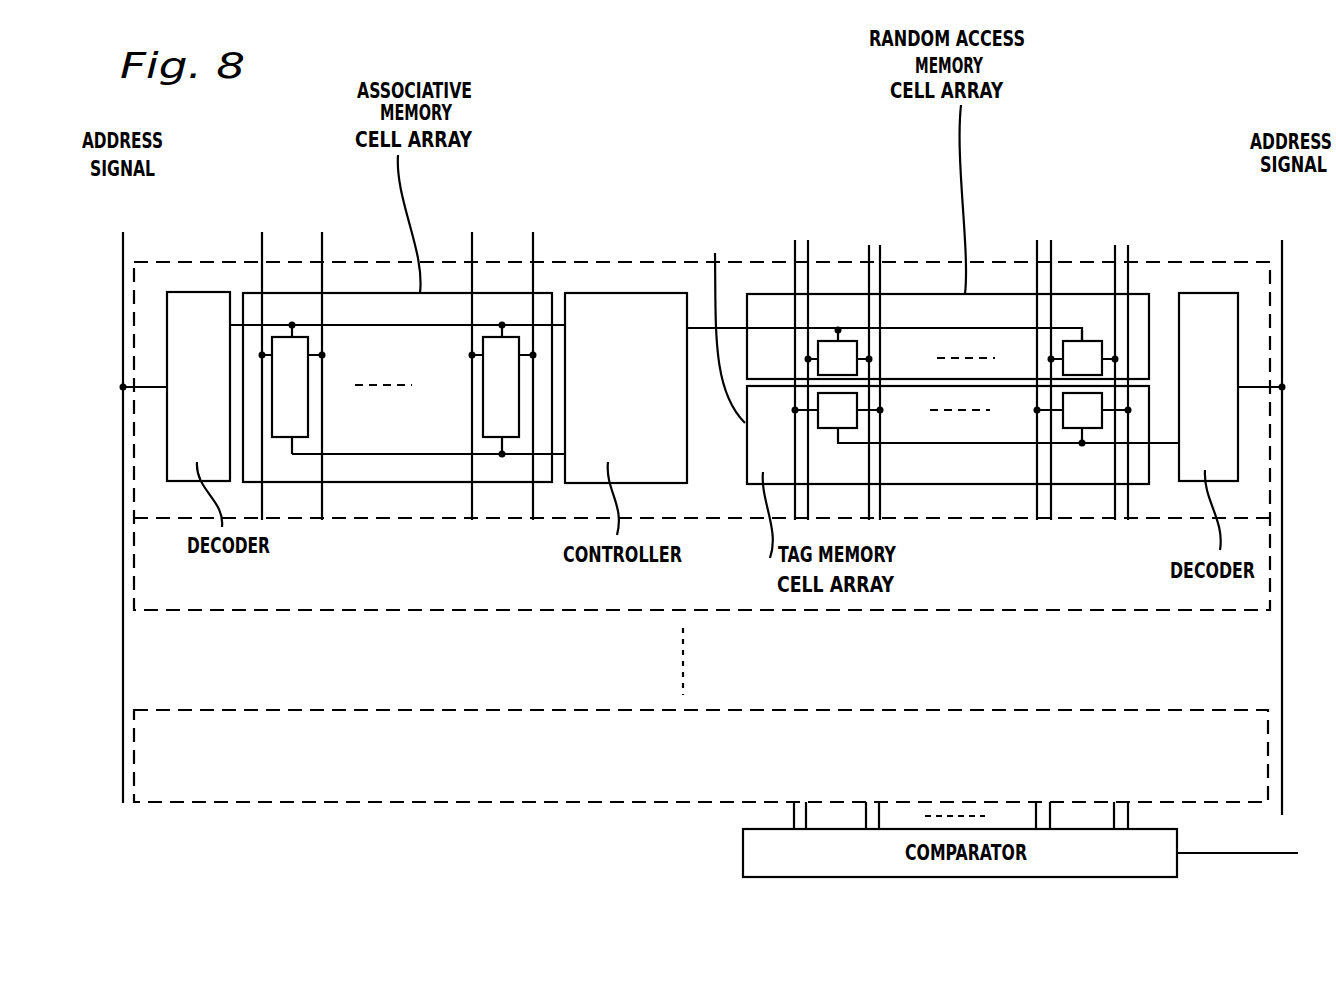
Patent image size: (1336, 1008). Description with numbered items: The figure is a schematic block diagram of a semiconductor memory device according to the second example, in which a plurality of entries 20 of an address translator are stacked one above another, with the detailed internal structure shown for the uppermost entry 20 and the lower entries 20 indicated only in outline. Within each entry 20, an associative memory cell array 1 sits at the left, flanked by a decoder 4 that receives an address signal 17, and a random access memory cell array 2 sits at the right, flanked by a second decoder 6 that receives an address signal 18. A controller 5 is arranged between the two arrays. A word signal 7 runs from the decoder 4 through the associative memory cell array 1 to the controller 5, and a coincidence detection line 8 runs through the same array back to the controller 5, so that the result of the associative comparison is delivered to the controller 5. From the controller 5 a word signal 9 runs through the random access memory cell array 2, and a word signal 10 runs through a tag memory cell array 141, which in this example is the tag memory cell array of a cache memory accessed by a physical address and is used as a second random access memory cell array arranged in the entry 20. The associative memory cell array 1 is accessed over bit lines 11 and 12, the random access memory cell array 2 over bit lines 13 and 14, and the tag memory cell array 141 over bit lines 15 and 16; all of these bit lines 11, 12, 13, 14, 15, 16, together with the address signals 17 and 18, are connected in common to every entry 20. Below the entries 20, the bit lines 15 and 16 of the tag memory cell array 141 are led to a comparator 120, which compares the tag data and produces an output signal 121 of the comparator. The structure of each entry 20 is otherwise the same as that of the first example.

The associative memory cell array 1 is at (395, 293).
The random access memory cell array 2 is at (930, 294).
The decoder 4 is at (190, 292).
The controller 5 is at (610, 293).
The decoder 6 is at (1205, 293).
The word signal 7 is at (412, 326).
The coincidence detection line 8 is at (400, 454).
The word signal 9 is at (930, 330).
The word signal 10 is at (958, 443).
The bit line 11 is at (472, 232).
The bit line 12 is at (322, 232).
The bit line 13 is at (808, 240).
The bit line 14 is at (1117, 245).
The bit line 15 is at (1037, 245).
The bit line 16 is at (1173, 172).
The address signal 17 is at (123, 232).
The address signal 18 is at (1283, 238).
The entry 20 is at (134, 735).
The comparator 120 is at (743, 855).
The output signal of comparator 121 is at (1274, 855).
The tag memory cell array 141 is at (705, 318).